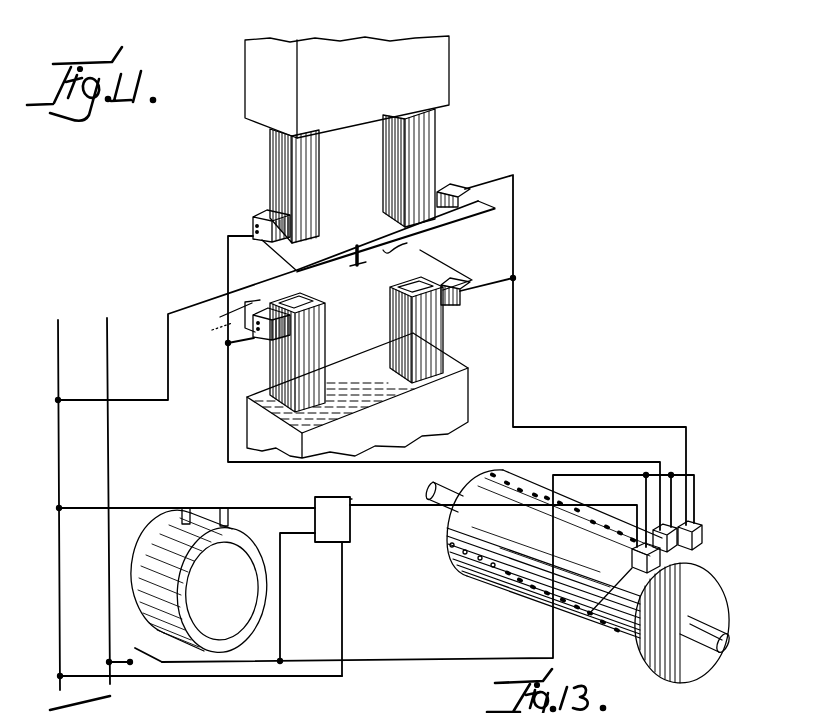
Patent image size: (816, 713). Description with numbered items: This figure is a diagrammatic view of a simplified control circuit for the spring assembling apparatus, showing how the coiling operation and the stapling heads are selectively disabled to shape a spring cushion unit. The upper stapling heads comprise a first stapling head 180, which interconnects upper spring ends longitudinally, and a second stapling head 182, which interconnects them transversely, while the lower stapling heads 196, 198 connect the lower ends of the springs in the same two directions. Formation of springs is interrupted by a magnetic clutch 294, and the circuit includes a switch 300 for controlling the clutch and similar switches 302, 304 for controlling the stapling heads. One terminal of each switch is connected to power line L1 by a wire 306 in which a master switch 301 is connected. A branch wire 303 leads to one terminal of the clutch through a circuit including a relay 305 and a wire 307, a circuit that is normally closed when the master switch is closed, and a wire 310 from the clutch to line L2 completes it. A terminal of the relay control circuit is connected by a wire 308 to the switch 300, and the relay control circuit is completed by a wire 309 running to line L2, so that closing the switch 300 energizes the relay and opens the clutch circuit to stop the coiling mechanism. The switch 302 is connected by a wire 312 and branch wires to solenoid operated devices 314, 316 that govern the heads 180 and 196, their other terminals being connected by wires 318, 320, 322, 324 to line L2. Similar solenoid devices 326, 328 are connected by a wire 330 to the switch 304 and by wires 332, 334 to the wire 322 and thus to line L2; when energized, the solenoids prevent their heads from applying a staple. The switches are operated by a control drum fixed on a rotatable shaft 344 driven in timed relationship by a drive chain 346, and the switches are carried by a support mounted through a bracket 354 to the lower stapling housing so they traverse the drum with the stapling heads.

The first stapling head 180 is at (278, 148).
The second stapling head 182 is at (420, 137).
The stapling head 196 is at (277, 355).
The stapling head 198 is at (447, 335).
The magnetic clutch 294 is at (260, 567).
The switch 300 is at (557, 621).
The master switch 301 is at (145, 663).
The switch 302 is at (682, 567).
The branch wire 303 is at (281, 624).
The switch 304 is at (693, 537).
The relay 305 is at (350, 497).
The wire 306 is at (353, 657).
The wire 307 is at (283, 505).
The wire 308 is at (377, 508).
The wire 309 is at (343, 613).
The wire 310 is at (136, 507).
The wire 312 is at (258, 468).
The solenoid operated device 314 is at (217, 321).
The solenoid operated device 316 is at (253, 216).
The wire 318 is at (318, 280).
The wire 320 is at (267, 247).
The wire 322 is at (358, 266).
The wire 324 is at (191, 303).
The solenoid device 326 is at (438, 185).
The solenoid device 328 is at (443, 285).
The wire 330 is at (515, 372).
The wire 332 is at (374, 240).
The wire 334 is at (407, 243).
The rotatable shaft 344 is at (698, 647).
The drive chain 346 is at (662, 668).
The bracket 354 is at (428, 593).
The power line L1 is at (104, 491).
The power line L2 is at (50, 494).